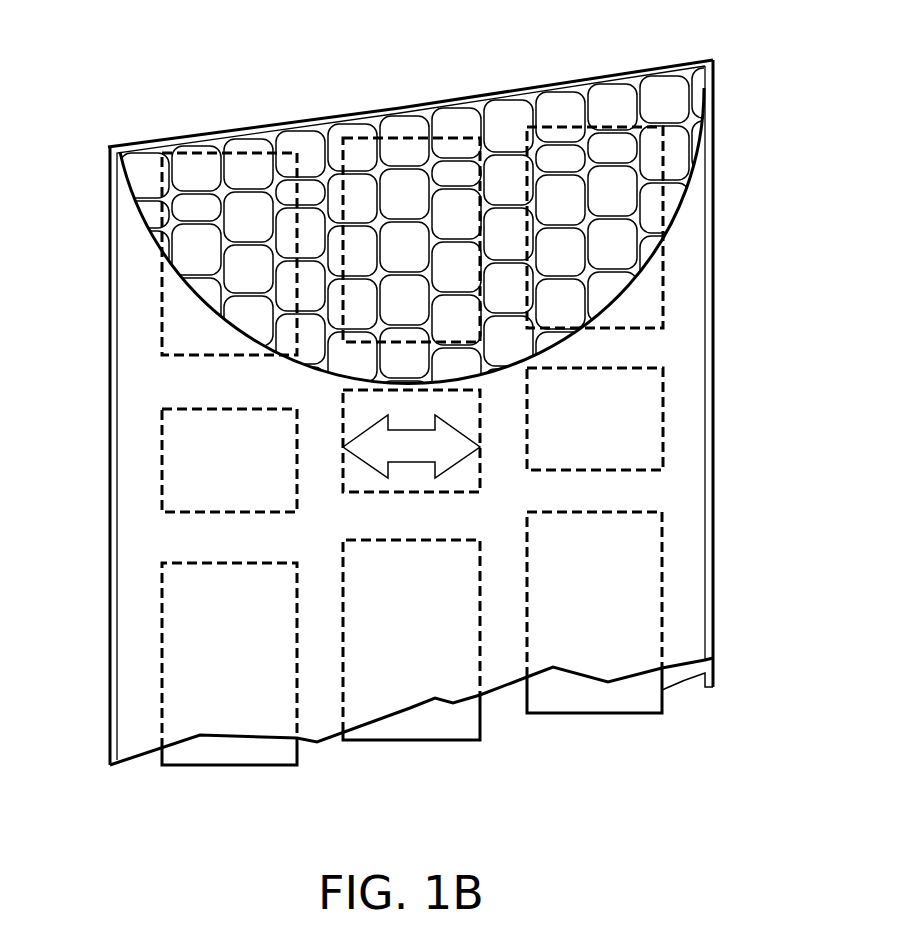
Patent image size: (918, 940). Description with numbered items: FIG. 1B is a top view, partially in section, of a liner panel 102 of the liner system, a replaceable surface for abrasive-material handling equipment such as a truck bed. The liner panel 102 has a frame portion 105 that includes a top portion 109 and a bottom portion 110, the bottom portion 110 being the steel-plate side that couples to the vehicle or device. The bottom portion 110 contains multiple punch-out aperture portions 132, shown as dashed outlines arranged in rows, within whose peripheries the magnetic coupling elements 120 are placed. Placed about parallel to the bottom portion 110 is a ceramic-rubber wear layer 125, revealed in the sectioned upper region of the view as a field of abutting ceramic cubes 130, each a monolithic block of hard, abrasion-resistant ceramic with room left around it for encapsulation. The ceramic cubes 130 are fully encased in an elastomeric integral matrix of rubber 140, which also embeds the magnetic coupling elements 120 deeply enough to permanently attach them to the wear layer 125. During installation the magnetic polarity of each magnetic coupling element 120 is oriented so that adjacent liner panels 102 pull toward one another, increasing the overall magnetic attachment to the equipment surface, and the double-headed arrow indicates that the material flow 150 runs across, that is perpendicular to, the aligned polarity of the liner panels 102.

The liner panel 102 is at (122, 812).
The frame portion 105 is at (646, 72).
The top portion 109 is at (140, 383).
The bottom portion 110 is at (705, 672).
The magnetic coupling element 120 is at (195, 467).
The ceramic-rubber wear layer 125 is at (678, 488).
The ceramic cube 130 is at (413, 118).
The punch-out aperture portion 132 is at (160, 488).
The rubber 140 is at (317, 742).
The material flow 150 is at (457, 463).